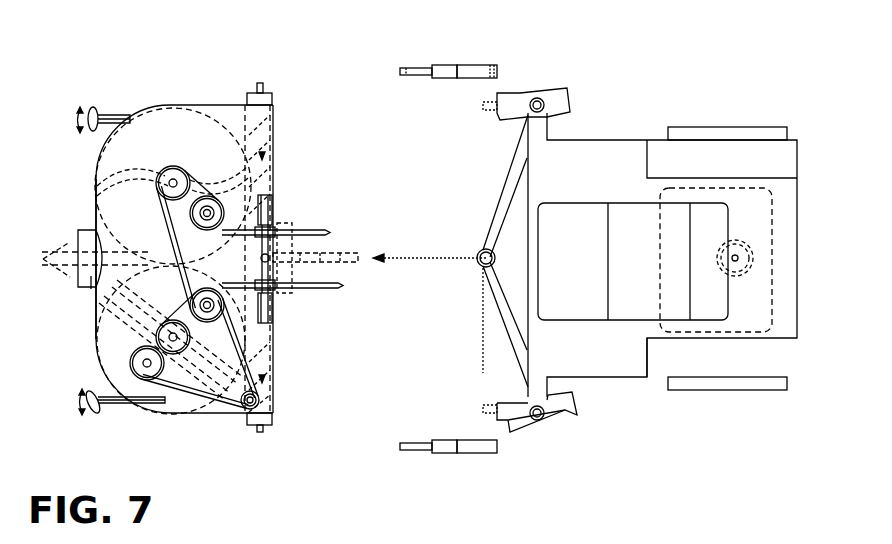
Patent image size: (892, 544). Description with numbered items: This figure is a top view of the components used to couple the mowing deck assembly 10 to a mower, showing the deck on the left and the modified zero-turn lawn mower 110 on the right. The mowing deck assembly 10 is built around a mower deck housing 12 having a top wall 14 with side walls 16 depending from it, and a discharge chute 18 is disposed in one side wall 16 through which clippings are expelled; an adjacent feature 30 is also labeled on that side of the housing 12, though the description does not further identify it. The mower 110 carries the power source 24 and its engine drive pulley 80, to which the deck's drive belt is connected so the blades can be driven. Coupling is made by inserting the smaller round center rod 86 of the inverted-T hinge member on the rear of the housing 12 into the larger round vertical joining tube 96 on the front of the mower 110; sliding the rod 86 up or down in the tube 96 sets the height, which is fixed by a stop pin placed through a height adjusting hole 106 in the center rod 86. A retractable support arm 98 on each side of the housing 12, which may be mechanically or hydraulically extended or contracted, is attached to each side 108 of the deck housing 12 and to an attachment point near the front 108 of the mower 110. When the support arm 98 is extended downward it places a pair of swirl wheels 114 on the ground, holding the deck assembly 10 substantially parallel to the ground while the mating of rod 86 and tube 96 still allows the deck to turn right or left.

The mowing deck assembly 10 is at (140, 86).
The mower deck housing 12 is at (88, 195).
The top wall 14 is at (230, 113).
The side walls 16 is at (210, 105).
The discharge chute 18 is at (91, 280).
The power source 24 is at (772, 217).
The item outlet tab 30 is at (58, 262).
The engine drive pulley 80 is at (754, 258).
The center rod 86 is at (358, 252).
The vertical joining tube 96 is at (478, 250).
The retractable support arm 98 is at (450, 67).
The height adjusting hole 106 is at (336, 262).
The side of the mowing deck housing / front of the lawn mower 108 is at (492, 110).
The zero-turn lawn mower 110 is at (627, 124).
The swirl wheels 114 is at (86, 412).